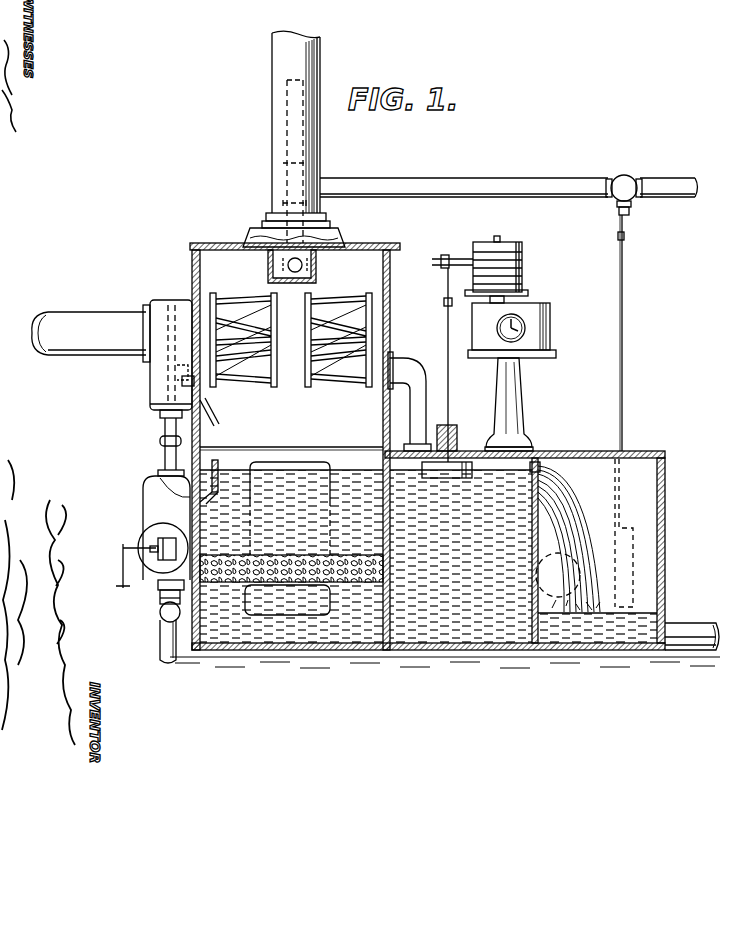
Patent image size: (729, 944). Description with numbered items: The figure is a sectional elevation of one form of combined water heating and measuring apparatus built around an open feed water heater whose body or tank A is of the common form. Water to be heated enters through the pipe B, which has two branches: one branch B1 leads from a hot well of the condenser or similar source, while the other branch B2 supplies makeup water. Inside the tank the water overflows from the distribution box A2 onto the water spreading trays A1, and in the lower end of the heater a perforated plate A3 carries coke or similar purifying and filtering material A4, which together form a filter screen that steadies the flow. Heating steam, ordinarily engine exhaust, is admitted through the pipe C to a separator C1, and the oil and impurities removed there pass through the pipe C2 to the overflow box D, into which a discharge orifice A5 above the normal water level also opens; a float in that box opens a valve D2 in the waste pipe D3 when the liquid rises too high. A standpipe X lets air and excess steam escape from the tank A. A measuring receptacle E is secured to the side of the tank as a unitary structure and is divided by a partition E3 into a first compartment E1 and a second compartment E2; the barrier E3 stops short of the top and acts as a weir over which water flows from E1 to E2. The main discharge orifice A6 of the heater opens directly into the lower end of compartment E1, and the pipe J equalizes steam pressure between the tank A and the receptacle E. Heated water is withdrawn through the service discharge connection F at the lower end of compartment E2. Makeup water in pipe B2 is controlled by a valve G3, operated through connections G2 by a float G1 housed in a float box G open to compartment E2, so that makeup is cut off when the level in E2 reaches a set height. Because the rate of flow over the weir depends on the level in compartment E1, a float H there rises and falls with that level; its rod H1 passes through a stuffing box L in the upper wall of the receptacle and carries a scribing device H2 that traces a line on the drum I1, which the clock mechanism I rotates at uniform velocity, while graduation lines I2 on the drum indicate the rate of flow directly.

The standpipe X is at (272, 71).
The water admission pipe B is at (283, 204).
The hot well branch pipe B1 is at (287, 126).
The makeup water supply pipe B2 is at (468, 184).
The heater tank A is at (390, 273).
The water spreading trays A1 is at (330, 330).
The distribution box A2 is at (268, 270).
The perforated plate A3 is at (358, 585).
The purifying and filtering material A4 is at (230, 562).
The overflow discharge orifice A5 is at (190, 486).
The main discharge orifice A6 is at (382, 622).
The steam pipe C is at (91, 333).
The separator C1 is at (156, 386).
The separator drain pipe C2 is at (163, 424).
The overflow box D is at (153, 533).
The overflow valve D2 is at (160, 606).
The waste pipe D3 is at (160, 646).
The measuring receptacle E is at (580, 456).
The first compartment E1 is at (480, 628).
The second compartment E2 is at (563, 645).
The partition or weir E3 is at (535, 640).
The service discharge connection F is at (690, 652).
The float box G is at (590, 528).
The makeup control float G1 is at (520, 600).
The float-to-valve connections G2 is at (623, 400).
The makeup supply valve G3 is at (625, 178).
The measuring float H is at (462, 462).
The float rod H1 is at (449, 380).
The scribing device H2 is at (462, 262).
The clock mechanism I is at (532, 312).
The record drum I1 is at (502, 258).
The graduation lines I2 is at (520, 266).
The equalizing pipe J is at (409, 391).
The stuffing box L is at (456, 430).